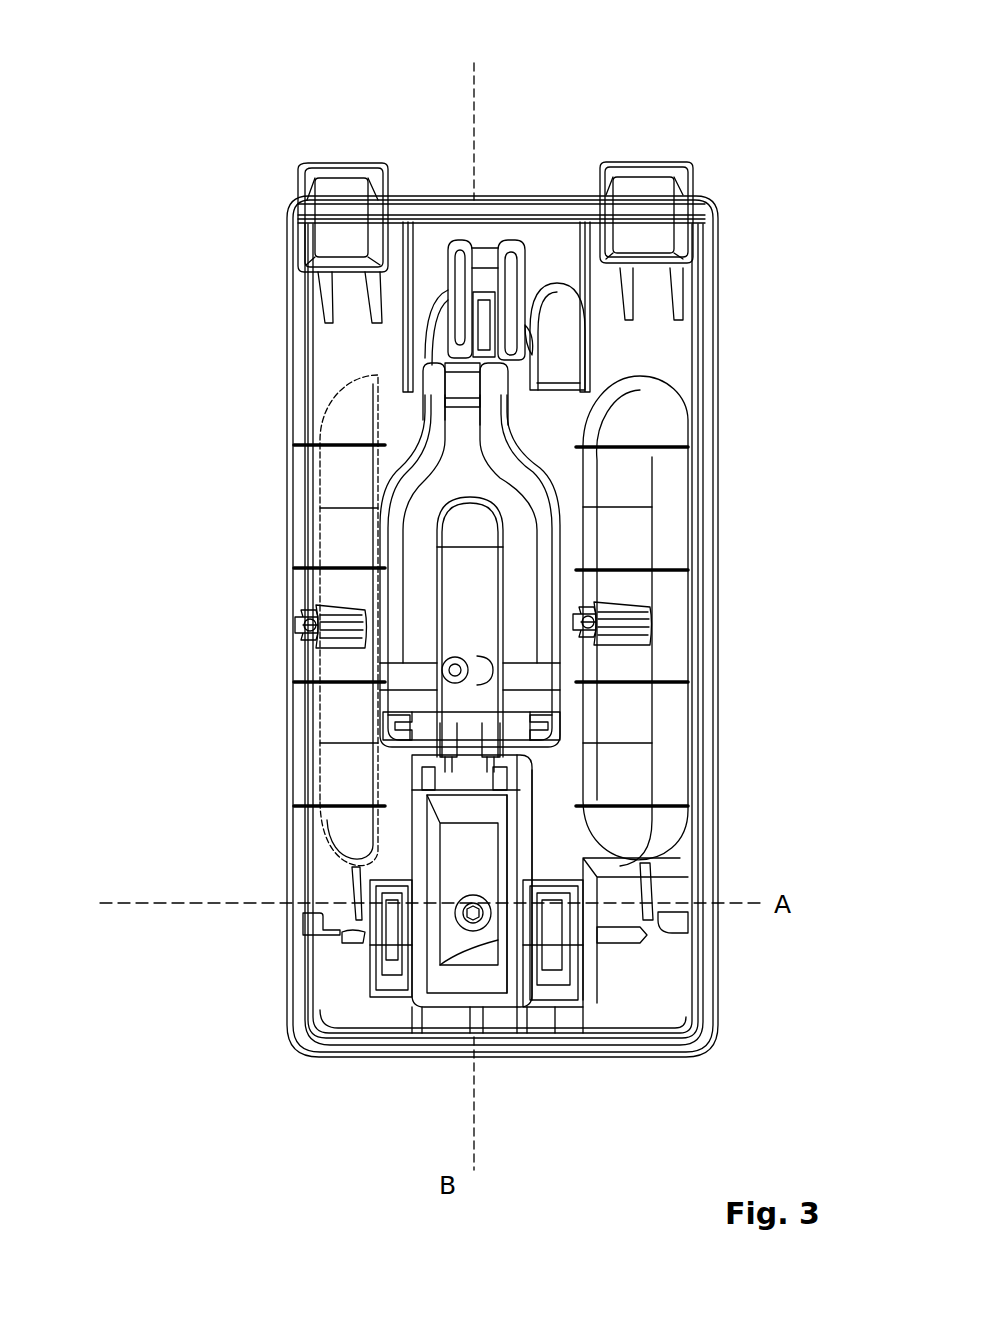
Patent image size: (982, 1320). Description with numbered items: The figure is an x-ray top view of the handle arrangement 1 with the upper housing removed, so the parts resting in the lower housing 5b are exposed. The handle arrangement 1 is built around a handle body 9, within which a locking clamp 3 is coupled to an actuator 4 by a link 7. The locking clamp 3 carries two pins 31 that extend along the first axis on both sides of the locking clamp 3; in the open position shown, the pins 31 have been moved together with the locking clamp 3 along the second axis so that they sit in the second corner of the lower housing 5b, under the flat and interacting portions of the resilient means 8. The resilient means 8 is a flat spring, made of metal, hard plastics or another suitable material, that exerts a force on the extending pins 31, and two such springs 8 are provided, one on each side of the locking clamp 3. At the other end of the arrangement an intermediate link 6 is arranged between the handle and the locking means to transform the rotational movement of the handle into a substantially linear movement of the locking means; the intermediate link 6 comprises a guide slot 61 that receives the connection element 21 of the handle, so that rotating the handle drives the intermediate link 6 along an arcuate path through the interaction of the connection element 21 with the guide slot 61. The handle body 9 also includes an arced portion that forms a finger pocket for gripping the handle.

The handle arrangement 1 is at (257, 93).
The handle body 9 is at (288, 348).
The intermediate link 6 is at (508, 233).
The guide slot 61 is at (520, 278).
The connection element 21 is at (530, 347).
The actuator 4 is at (505, 503).
The link 7 is at (543, 740).
The locking clamp 3 is at (410, 945).
The pins 31 is at (560, 945).
The lower housing 5b is at (383, 993).
The resilient means 8 is at (590, 1003).